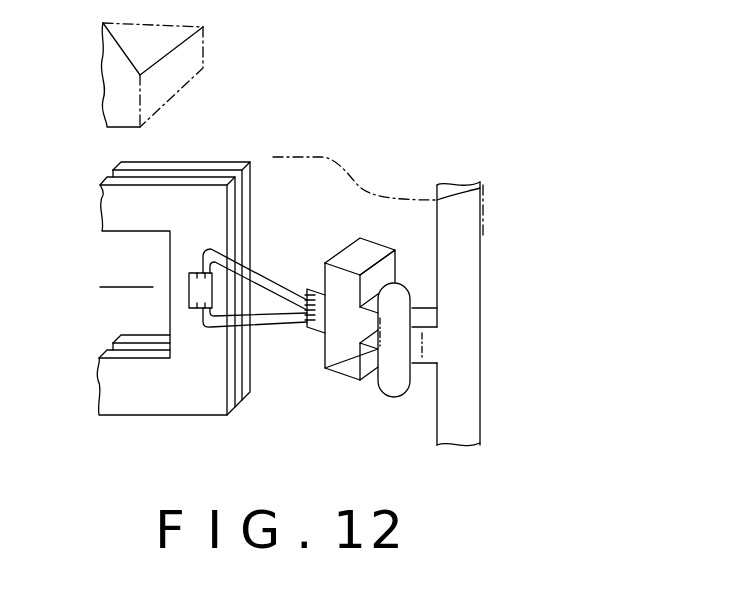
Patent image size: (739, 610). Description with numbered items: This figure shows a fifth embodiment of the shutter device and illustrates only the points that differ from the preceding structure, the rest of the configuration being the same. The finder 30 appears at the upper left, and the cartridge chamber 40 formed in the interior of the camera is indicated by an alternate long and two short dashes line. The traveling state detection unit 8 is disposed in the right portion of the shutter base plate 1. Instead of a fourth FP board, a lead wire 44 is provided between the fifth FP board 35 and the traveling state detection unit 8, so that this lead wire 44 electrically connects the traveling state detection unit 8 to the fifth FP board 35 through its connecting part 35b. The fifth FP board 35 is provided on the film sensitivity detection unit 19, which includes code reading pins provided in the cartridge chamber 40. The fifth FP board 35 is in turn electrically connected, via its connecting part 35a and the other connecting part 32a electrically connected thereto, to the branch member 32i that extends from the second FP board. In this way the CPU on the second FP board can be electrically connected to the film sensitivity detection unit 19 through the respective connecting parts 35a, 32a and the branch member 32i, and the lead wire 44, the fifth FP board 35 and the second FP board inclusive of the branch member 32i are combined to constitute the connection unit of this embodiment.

The shutter base plate 1 is at (102, 214).
The traveling state detection unit 8 is at (189, 284).
The film sensitivity detection unit 19 is at (387, 250).
The finder 30 is at (205, 62).
The connecting part 32a is at (437, 307).
The branch member 32i is at (465, 373).
The fifth FP board 35 is at (342, 360).
The connecting part 35a is at (398, 287).
The connecting part 35b is at (313, 328).
The cartridge chamber 40 is at (327, 157).
The lead wire 44 is at (274, 280).